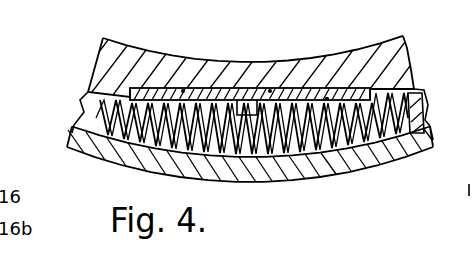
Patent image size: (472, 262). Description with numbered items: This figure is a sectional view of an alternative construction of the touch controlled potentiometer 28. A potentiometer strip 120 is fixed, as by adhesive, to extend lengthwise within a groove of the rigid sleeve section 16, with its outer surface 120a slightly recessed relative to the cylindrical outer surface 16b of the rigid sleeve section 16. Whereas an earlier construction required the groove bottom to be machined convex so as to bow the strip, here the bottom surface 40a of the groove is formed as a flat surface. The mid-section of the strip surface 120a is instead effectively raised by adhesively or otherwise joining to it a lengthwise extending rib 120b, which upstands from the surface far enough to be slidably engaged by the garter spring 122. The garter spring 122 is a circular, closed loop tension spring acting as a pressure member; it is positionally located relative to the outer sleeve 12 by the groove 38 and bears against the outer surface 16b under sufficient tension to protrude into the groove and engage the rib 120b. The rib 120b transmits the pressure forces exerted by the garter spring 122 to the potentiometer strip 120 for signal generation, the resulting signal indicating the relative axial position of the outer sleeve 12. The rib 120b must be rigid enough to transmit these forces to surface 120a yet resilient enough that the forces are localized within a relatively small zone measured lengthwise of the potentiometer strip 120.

The outer sleeve 12 is at (94, 165).
The rigid sleeve section 16 is at (104, 60).
The cylindrical outer surface 16b is at (417, 90).
The touch controlled potentiometer 28 is at (70, 88).
The groove 38 is at (395, 142).
The bottom surface 40a is at (338, 94).
The potentiometer strip 120 is at (190, 93).
The outer surface 120a is at (344, 34).
The rib 120b is at (238, 110).
The garter spring 122 is at (424, 100).